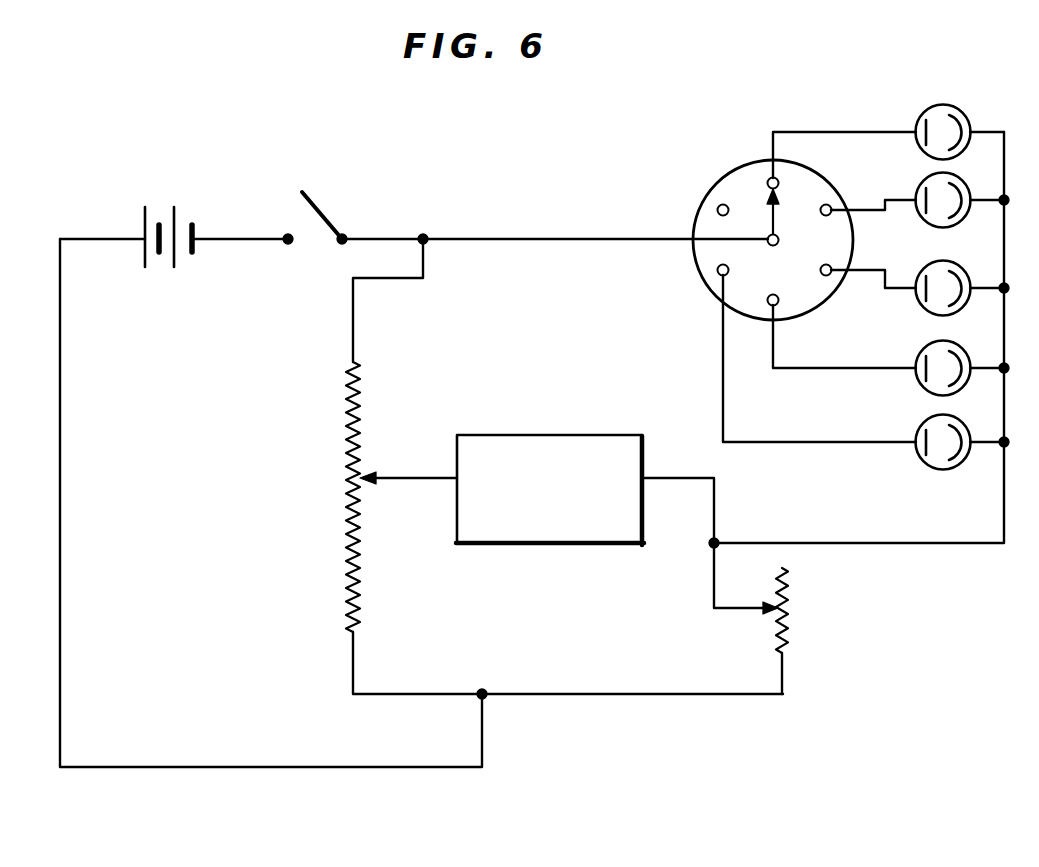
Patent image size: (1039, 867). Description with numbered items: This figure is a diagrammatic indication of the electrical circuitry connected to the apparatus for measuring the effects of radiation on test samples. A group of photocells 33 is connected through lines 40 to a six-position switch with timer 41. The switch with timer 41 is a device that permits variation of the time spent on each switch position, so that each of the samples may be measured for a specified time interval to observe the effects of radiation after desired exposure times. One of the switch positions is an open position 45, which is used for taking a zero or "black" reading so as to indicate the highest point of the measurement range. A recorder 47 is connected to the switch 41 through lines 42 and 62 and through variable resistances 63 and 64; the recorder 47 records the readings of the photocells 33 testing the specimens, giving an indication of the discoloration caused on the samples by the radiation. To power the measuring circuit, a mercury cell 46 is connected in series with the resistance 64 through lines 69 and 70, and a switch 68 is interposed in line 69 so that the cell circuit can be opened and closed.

The photocells 33 is at (965, 114).
The lines 40 is at (858, 133).
The six-position switch with timer 41 is at (749, 167).
The line 42 is at (600, 238).
The open position 45 is at (718, 206).
The mercury cell 46 is at (158, 221).
The recorder 47 is at (588, 434).
The line 62 is at (878, 541).
The variable resistance 63 is at (790, 596).
The variable resistance 64 is at (348, 460).
The switch 68 is at (321, 202).
The line 69 is at (259, 237).
The line 70 is at (440, 768).